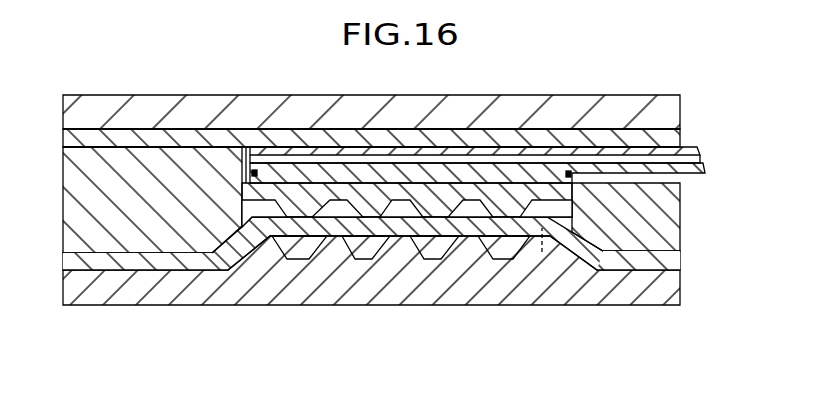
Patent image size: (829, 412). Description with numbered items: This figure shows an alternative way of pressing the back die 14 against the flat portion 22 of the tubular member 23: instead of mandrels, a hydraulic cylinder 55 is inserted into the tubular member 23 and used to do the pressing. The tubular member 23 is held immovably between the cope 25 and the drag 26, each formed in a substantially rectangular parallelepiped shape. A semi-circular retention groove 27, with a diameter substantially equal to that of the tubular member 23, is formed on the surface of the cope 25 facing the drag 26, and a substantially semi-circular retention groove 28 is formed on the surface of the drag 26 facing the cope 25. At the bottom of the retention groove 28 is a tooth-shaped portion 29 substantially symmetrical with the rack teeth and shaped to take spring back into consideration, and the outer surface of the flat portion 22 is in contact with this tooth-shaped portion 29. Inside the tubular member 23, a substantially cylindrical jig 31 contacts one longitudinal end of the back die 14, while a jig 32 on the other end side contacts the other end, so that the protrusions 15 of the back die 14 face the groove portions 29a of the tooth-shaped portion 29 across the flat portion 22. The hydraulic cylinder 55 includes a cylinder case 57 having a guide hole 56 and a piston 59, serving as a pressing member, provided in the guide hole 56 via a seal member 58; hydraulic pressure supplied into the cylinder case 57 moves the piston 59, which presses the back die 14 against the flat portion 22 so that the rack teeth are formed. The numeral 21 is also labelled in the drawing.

The back die 14 is at (492, 175).
The protrusions 15 is at (443, 206).
The heat conducting plate 21 is at (350, 133).
The flat portion 22 is at (543, 255).
The tubular member 23 is at (681, 123).
The cope 25 is at (77, 114).
The drag 26 is at (70, 295).
The retention groove 27 is at (147, 131).
The retention groove 28 is at (158, 262).
The tooth-shaped portion 29 is at (408, 247).
The groove portions 29a is at (366, 255).
The jig 31 is at (70, 200).
The frame member 32 is at (665, 219).
The hydraulic cylinder 55 is at (498, 124).
The guide hole 56 is at (262, 158).
The cylinder case 57 is at (293, 148).
The seal member 58 is at (560, 170).
The piston 59 is at (437, 175).